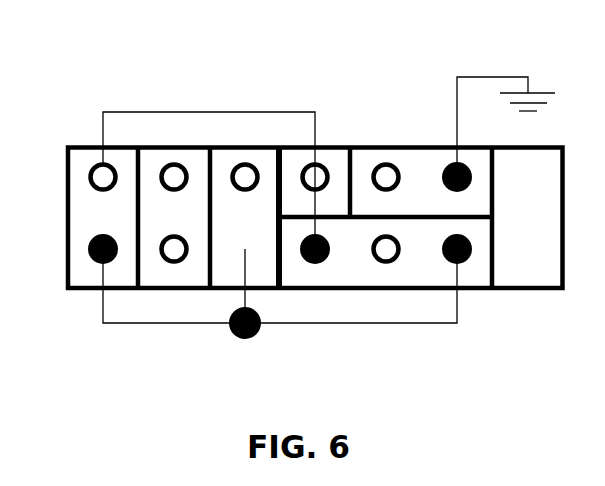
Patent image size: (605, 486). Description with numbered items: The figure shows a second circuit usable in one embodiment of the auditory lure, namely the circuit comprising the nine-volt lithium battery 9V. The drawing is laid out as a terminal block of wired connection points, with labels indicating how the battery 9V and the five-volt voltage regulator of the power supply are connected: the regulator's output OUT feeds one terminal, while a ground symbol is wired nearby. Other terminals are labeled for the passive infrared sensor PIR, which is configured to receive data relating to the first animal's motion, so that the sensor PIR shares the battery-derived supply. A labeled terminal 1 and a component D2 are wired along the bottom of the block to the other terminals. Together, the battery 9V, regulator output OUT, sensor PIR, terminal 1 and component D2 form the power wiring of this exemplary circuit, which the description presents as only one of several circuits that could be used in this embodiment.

The 9 V lithium battery 9V is at (76, 135).
The 5V regulator output terminal OUT is at (443, 105).
The passive infrared sensor PIR is at (271, 314).
The terminal 1 is at (248, 304).
The diode D2 is at (245, 352).